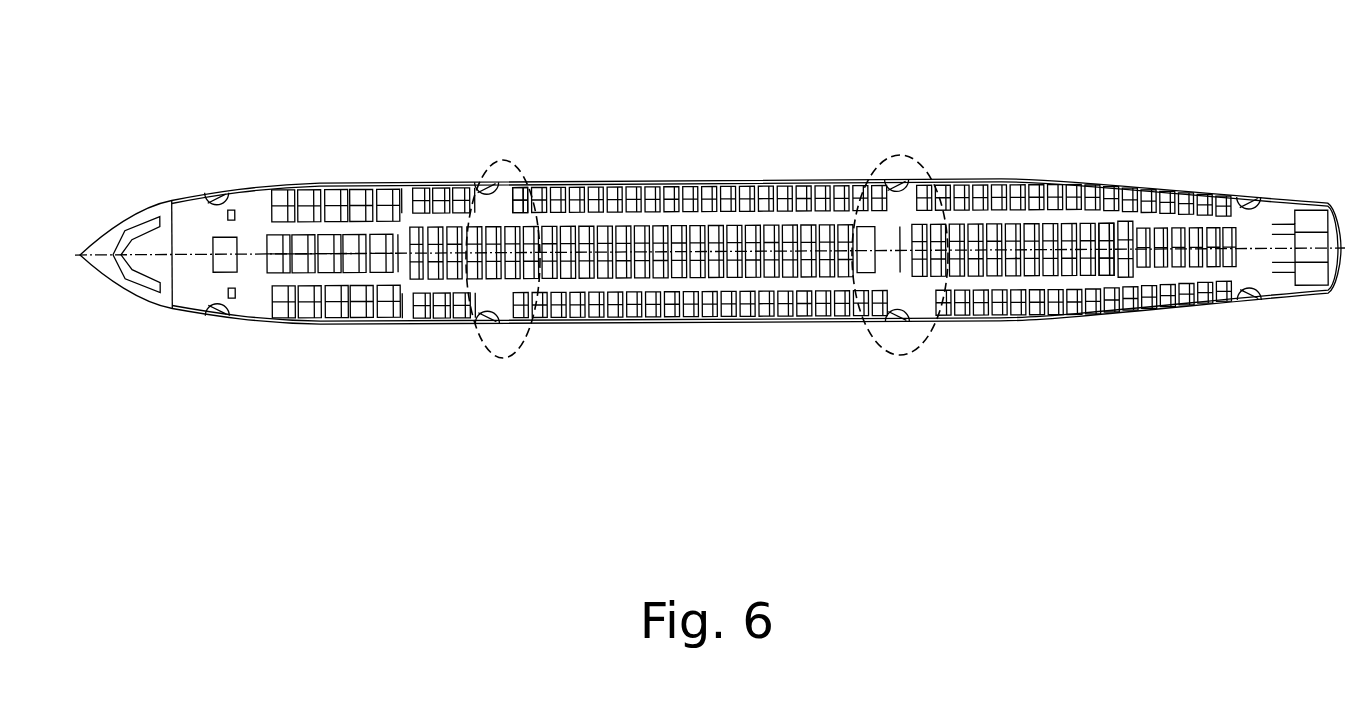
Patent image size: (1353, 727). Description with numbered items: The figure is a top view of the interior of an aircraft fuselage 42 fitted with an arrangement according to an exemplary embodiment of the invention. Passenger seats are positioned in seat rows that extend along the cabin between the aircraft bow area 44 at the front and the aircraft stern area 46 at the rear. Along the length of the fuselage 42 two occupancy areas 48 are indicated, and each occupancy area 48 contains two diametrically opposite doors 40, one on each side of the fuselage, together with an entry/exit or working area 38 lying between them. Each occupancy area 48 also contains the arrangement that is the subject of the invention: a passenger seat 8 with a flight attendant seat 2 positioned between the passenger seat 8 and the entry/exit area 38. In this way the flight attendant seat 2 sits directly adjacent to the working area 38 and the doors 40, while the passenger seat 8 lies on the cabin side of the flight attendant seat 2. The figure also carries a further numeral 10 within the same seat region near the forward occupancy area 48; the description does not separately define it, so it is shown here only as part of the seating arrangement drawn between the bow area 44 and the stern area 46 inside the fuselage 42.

The flight attendant seat 2 is at (455, 207).
The passenger seat 8 is at (442, 188).
The seat 10 is at (458, 192).
The entry/exit or working area 38 is at (498, 207).
The door 40 is at (485, 194).
The aircraft fuselage 42 is at (1050, 178).
The aircraft bow area 44 is at (190, 302).
The aircraft stern area 46 is at (1275, 208).
The occupancy area 48 is at (491, 157).